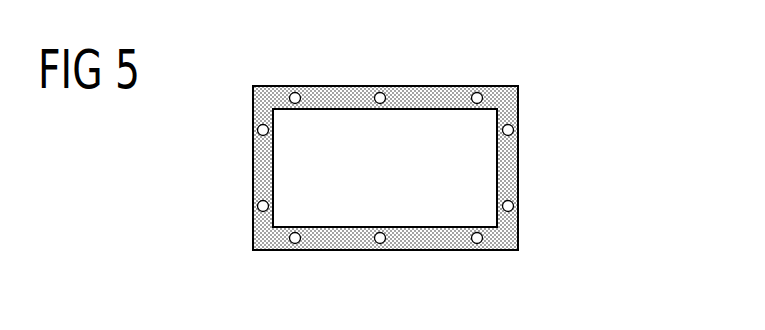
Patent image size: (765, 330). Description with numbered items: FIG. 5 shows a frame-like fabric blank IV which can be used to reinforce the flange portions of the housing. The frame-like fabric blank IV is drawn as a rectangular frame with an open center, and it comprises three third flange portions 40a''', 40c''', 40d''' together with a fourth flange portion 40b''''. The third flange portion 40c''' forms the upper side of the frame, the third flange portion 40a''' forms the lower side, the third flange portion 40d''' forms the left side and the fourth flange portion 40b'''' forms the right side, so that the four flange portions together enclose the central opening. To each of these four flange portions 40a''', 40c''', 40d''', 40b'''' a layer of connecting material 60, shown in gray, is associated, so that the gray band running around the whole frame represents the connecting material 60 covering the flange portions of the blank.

The layer of connecting material 60 is at (437, 85).
The third flange portion 40a''' is at (385, 271).
The fourth flange portion 40b'''' is at (554, 168).
The third flange portion 40c''' is at (385, 64).
The third flange portion 40d''' is at (209, 168).
The frame-like fabric blank IV is at (540, 76).